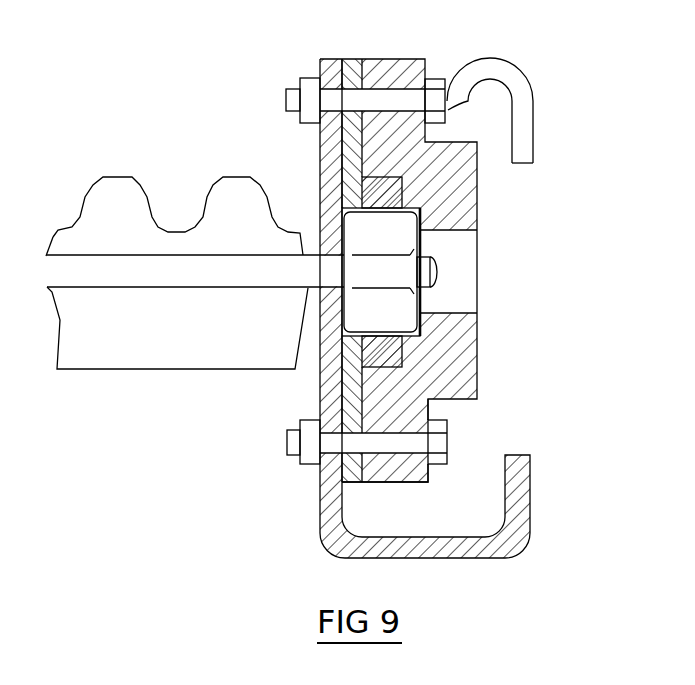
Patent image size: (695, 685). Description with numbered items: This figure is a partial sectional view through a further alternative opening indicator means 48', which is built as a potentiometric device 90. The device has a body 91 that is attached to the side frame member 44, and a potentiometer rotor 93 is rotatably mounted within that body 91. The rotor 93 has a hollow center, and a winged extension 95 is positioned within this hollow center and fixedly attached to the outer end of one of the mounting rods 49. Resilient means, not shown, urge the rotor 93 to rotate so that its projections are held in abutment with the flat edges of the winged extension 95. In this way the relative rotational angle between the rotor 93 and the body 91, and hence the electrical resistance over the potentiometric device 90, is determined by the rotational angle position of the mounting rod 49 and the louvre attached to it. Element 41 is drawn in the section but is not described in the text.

The toothed pulley 41 is at (122, 205).
The side frame member 44 is at (500, 68).
The opening indicator means 48' is at (559, 177).
The mounting rod 49 is at (437, 272).
The potentiometric device 90 is at (490, 335).
The body 91 is at (410, 410).
The potentiometer rotor 93 is at (395, 355).
The winged extension 95 is at (420, 213).